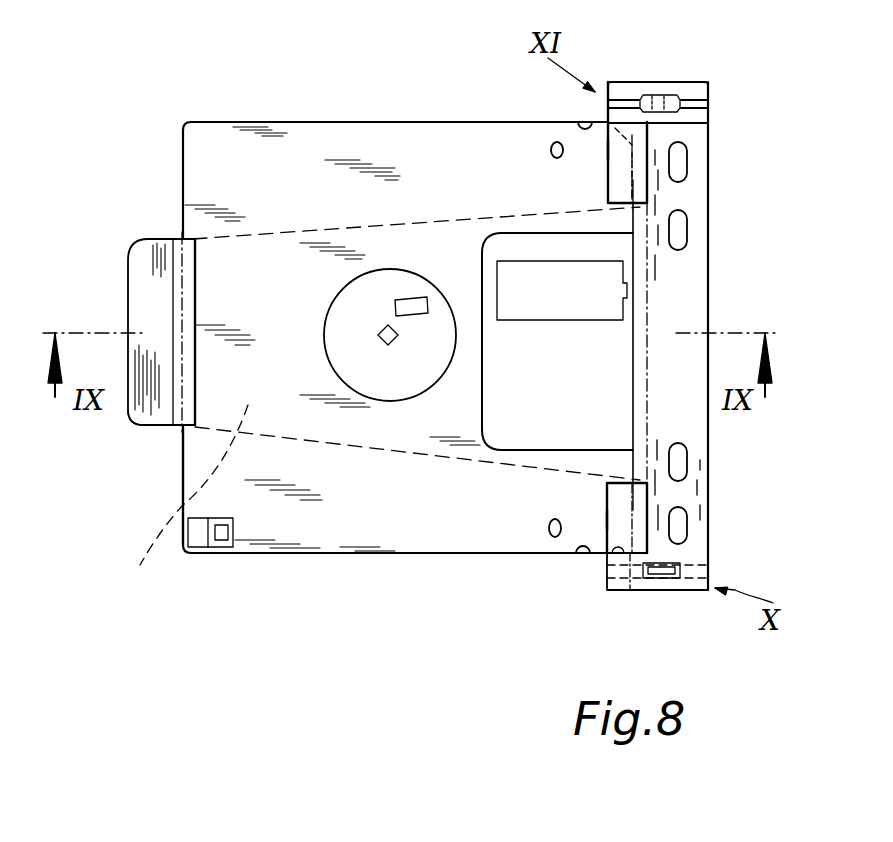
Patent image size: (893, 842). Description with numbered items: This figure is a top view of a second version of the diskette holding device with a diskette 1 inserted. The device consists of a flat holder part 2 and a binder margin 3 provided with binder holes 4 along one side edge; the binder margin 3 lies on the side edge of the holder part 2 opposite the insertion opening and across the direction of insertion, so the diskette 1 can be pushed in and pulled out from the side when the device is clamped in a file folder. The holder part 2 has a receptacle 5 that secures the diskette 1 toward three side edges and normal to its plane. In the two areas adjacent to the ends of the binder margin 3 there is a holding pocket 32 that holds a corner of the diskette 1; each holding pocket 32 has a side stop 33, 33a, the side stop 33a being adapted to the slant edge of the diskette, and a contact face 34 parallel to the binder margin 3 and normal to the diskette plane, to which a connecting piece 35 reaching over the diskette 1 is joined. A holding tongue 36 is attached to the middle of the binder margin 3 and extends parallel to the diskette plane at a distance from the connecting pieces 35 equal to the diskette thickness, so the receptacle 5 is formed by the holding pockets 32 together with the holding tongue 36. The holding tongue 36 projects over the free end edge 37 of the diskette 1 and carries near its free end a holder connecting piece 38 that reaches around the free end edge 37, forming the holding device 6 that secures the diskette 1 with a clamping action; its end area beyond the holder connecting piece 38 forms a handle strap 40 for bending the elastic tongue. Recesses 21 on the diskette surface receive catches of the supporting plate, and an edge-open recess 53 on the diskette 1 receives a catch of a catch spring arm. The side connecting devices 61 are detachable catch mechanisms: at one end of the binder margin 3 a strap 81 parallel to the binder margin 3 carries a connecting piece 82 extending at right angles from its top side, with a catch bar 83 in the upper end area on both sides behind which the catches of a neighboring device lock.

The diskette 1 is at (280, 177).
The holder part 2 is at (382, 566).
The binder margin 3 is at (717, 297).
The binder holes 4 is at (683, 163).
The receptacle 5 is at (593, 147).
The holding device 6 is at (163, 227).
The recesses 21 is at (552, 144).
The holding pocket 32 is at (620, 160).
The side stop 33 is at (618, 549).
The side stop 33a is at (623, 137).
The contact face 34 is at (633, 180).
The connecting piece 35 is at (630, 183).
The holding tongue 36 is at (171, 496).
The free end edge 37 is at (174, 472).
The holder connecting piece 38 is at (187, 278).
The handle strap 40 is at (150, 388).
The recess 53 is at (582, 122).
The side connecting devices 61 is at (725, 82).
The strap 81 is at (698, 88).
The connecting piece 82 is at (710, 103).
The catch bar 83 is at (661, 95).